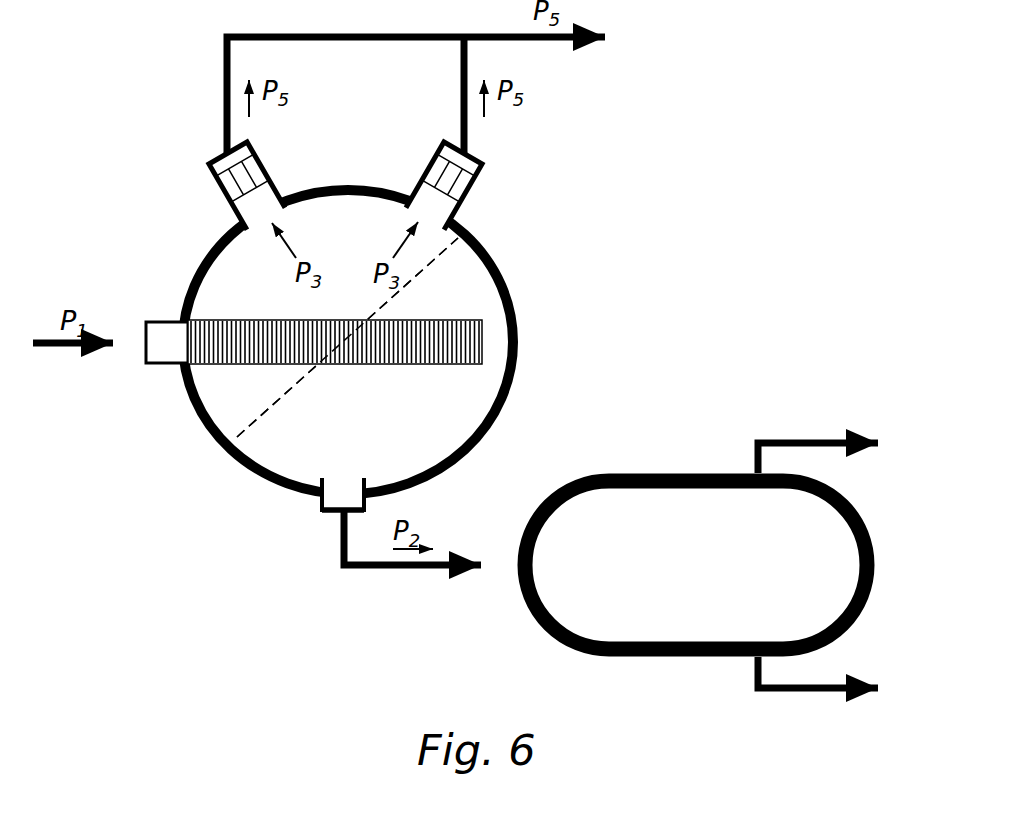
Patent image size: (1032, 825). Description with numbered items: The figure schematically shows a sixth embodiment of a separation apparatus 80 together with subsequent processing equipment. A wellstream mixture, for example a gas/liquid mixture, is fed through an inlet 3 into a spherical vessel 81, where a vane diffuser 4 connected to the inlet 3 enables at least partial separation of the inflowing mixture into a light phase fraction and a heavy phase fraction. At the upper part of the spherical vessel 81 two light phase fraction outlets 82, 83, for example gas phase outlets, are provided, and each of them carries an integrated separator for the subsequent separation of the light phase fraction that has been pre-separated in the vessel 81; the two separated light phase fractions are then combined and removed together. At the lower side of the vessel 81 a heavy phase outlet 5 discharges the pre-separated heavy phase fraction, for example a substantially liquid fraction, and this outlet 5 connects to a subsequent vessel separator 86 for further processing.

The separation apparatus 80 is at (114, 114).
The spherical vessel 81 is at (202, 423).
The light phase fraction outlet 82 is at (247, 220).
The light phase fraction outlet 83 is at (444, 220).
The subsequent vessel separator 86 is at (647, 460).
The inlet 3 is at (152, 318).
The vane diffuser 4 is at (368, 366).
The heavy phase outlet 5 is at (318, 505).